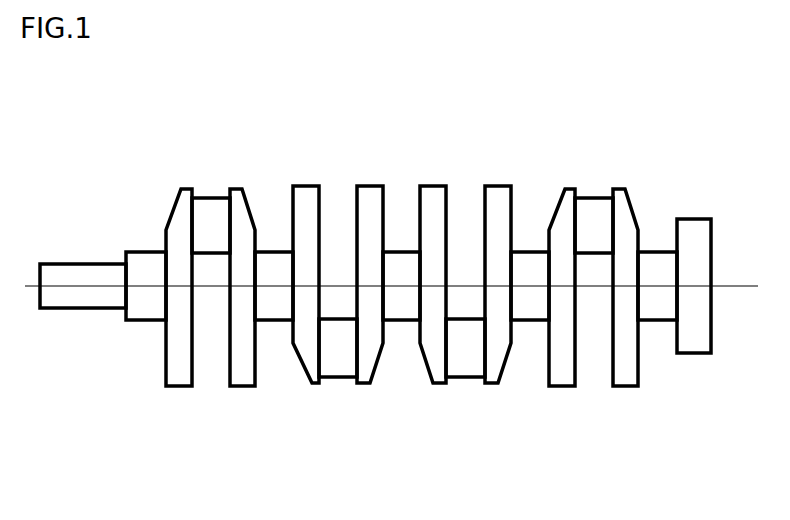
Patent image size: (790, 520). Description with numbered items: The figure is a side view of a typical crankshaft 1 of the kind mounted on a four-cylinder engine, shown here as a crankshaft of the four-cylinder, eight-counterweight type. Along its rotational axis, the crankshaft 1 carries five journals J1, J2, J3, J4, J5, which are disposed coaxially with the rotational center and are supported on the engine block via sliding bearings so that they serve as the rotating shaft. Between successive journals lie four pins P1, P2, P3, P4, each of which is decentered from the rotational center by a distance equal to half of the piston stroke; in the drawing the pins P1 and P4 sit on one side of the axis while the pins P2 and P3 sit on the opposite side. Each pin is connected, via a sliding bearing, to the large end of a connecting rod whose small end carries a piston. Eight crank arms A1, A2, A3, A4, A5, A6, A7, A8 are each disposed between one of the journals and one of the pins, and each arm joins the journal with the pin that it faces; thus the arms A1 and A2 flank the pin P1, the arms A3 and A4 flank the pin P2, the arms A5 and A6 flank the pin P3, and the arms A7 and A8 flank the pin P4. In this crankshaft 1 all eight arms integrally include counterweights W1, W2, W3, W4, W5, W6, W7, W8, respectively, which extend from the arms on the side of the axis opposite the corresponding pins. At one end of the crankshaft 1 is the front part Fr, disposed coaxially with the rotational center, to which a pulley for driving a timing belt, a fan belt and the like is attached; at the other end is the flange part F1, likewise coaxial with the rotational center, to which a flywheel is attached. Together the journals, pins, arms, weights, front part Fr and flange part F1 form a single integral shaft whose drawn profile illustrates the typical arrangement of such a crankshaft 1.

The crankshaft 1 is at (86, 122).
The front part Fr is at (78, 263).
The journal J1 is at (143, 252).
The journal J2 is at (272, 252).
The journal J3 is at (402, 252).
The journal J4 is at (525, 252).
The journal J5 is at (655, 252).
The pin P1 is at (210, 200).
The pin P2 is at (337, 378).
The pin P3 is at (465, 378).
The pin P4 is at (592, 200).
The crank arm A1 is at (182, 213).
The crank arm A2 is at (249, 215).
The crank arm A3 is at (307, 372).
The crank arm A4 is at (370, 376).
The crank arm A5 is at (433, 375).
The crank arm A6 is at (497, 375).
The crank arm A7 is at (563, 212).
The crank arm A8 is at (627, 212).
The counterweight W1 is at (173, 387).
The counterweight W2 is at (243, 387).
The counterweight W3 is at (305, 190).
The counterweight W4 is at (377, 190).
The counterweight W5 is at (430, 190).
The counterweight W6 is at (500, 190).
The counterweight W7 is at (557, 387).
The counterweight W8 is at (628, 387).
The flange part F1 is at (693, 219).